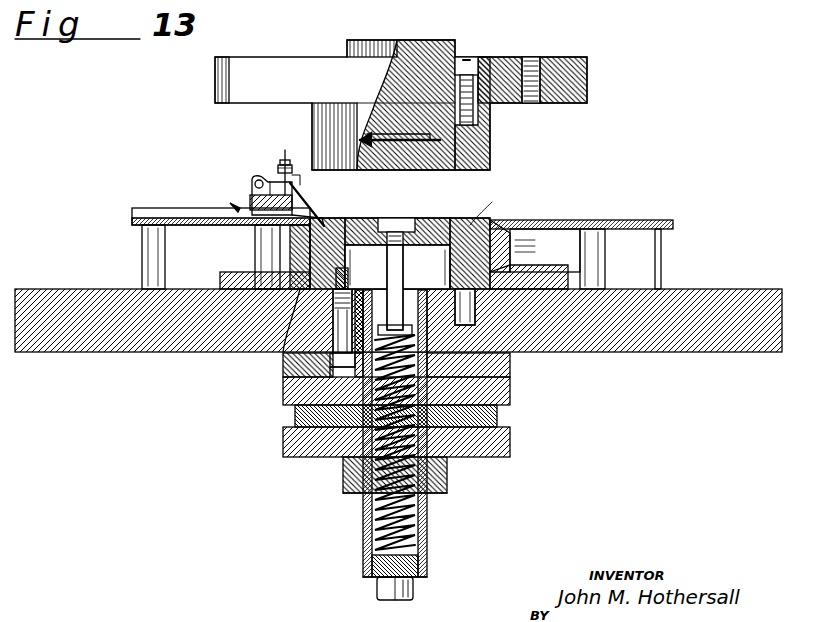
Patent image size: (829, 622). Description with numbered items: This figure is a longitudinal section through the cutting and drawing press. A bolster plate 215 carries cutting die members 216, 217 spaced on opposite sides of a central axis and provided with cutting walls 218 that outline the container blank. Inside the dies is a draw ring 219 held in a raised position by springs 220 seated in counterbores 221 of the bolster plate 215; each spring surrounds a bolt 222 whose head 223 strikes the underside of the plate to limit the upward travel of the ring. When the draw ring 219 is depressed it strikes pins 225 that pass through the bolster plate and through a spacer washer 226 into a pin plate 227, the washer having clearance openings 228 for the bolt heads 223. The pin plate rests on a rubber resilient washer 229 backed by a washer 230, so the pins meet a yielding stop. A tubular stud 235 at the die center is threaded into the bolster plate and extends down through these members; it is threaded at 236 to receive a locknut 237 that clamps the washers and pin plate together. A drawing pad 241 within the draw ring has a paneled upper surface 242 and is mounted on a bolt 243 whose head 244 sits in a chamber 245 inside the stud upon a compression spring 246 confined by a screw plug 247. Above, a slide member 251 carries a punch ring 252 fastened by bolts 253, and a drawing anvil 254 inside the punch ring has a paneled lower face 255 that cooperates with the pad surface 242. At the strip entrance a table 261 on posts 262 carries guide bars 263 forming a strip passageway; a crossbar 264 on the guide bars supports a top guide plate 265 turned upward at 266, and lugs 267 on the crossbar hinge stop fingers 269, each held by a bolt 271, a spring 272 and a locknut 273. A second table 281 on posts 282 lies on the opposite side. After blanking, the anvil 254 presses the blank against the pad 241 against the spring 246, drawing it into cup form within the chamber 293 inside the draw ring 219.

The bolster plate 215 is at (95, 292).
The cutting die member 216 is at (520, 248).
The cutting die member 217 is at (220, 280).
The cutting walls 218 is at (350, 218).
The draw ring 219 is at (500, 218).
The springs 220 is at (290, 345).
The counterbores 221 is at (283, 385).
The bolt 222 is at (283, 400).
The head 223 is at (295, 412).
The pins 225 is at (522, 268).
The spacer washer 226 is at (512, 370).
The pin plate 227 is at (512, 392).
The clearance openings 228 is at (340, 430).
The resilient washer 229 is at (499, 416).
The washer 230 is at (512, 440).
The tubular stud 235 is at (372, 500).
The threaded portion 236 is at (432, 476).
The locknut 237 is at (449, 489).
The drawing pad 241 is at (440, 245).
The paneled surface 242 is at (393, 212).
The bolt 243 is at (404, 268).
The head 244 is at (362, 272).
The chamber 245 is at (372, 520).
The compression spring 246 is at (428, 522).
The screw plug 247 is at (428, 562).
The slide member 251 is at (590, 75).
The punch ring 252 is at (492, 138).
The bolts 253 is at (470, 64).
The drawing anvil 254 is at (450, 42).
The paneled face 255 is at (400, 146).
The supporting table 261 is at (182, 212).
The posts 262 is at (165, 250).
The guide bars 263 is at (132, 212).
The crossbar 264 is at (248, 200).
The top guide plate 265 is at (280, 233).
The upturned portion 266 is at (232, 206).
The lugs 267 is at (272, 185).
The stop fingers 269 is at (312, 196).
The bolt 271 is at (292, 159).
The spring 272 is at (296, 178).
The locknut 273 is at (278, 168).
The second table 281 is at (660, 218).
The posts 282 is at (605, 256).
The chamber 293 is at (476, 206).